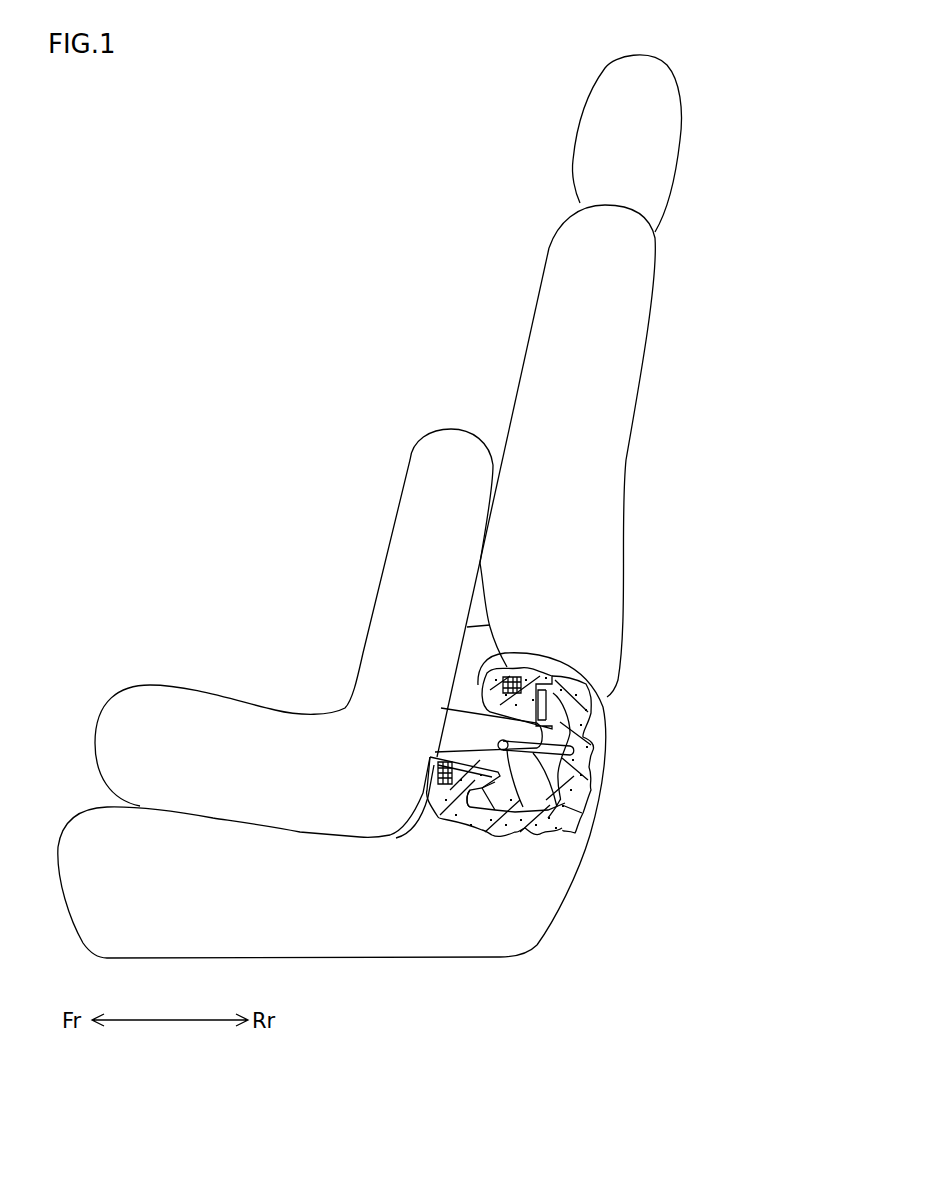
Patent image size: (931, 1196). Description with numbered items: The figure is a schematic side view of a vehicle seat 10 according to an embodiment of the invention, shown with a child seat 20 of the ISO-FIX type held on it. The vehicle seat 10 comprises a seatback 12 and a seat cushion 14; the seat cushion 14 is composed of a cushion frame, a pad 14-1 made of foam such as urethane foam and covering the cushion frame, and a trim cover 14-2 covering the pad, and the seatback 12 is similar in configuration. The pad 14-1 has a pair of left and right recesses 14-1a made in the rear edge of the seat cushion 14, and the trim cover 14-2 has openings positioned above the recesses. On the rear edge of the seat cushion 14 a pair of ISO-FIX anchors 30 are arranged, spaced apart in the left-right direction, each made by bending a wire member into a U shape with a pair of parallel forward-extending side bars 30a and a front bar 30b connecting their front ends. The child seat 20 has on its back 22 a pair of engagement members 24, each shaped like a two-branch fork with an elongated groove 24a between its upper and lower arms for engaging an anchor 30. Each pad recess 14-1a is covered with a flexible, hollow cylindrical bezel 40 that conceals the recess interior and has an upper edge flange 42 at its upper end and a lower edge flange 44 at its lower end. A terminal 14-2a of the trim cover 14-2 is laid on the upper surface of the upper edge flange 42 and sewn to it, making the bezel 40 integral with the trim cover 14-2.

The vehicle seat 10 is at (480, 386).
The seatback 12 is at (657, 431).
The seat cushion 14 is at (77, 769).
The pad 14-1 is at (575, 818).
The recess 14-1a is at (503, 800).
The trim cover 14-2 is at (488, 660).
The terminal 14-2a is at (512, 690).
The child seat 20 is at (346, 529).
The back 22 is at (468, 627).
The engagement member 24 is at (463, 720).
The groove 24a is at (575, 805).
The ISO-FIX anchor 30 is at (588, 791).
The side bar 30a is at (573, 730).
The front bar 30b is at (535, 835).
The bezel 40 is at (436, 738).
The upper edge flange 42 is at (475, 785).
The lower edge flange 44 is at (536, 710).